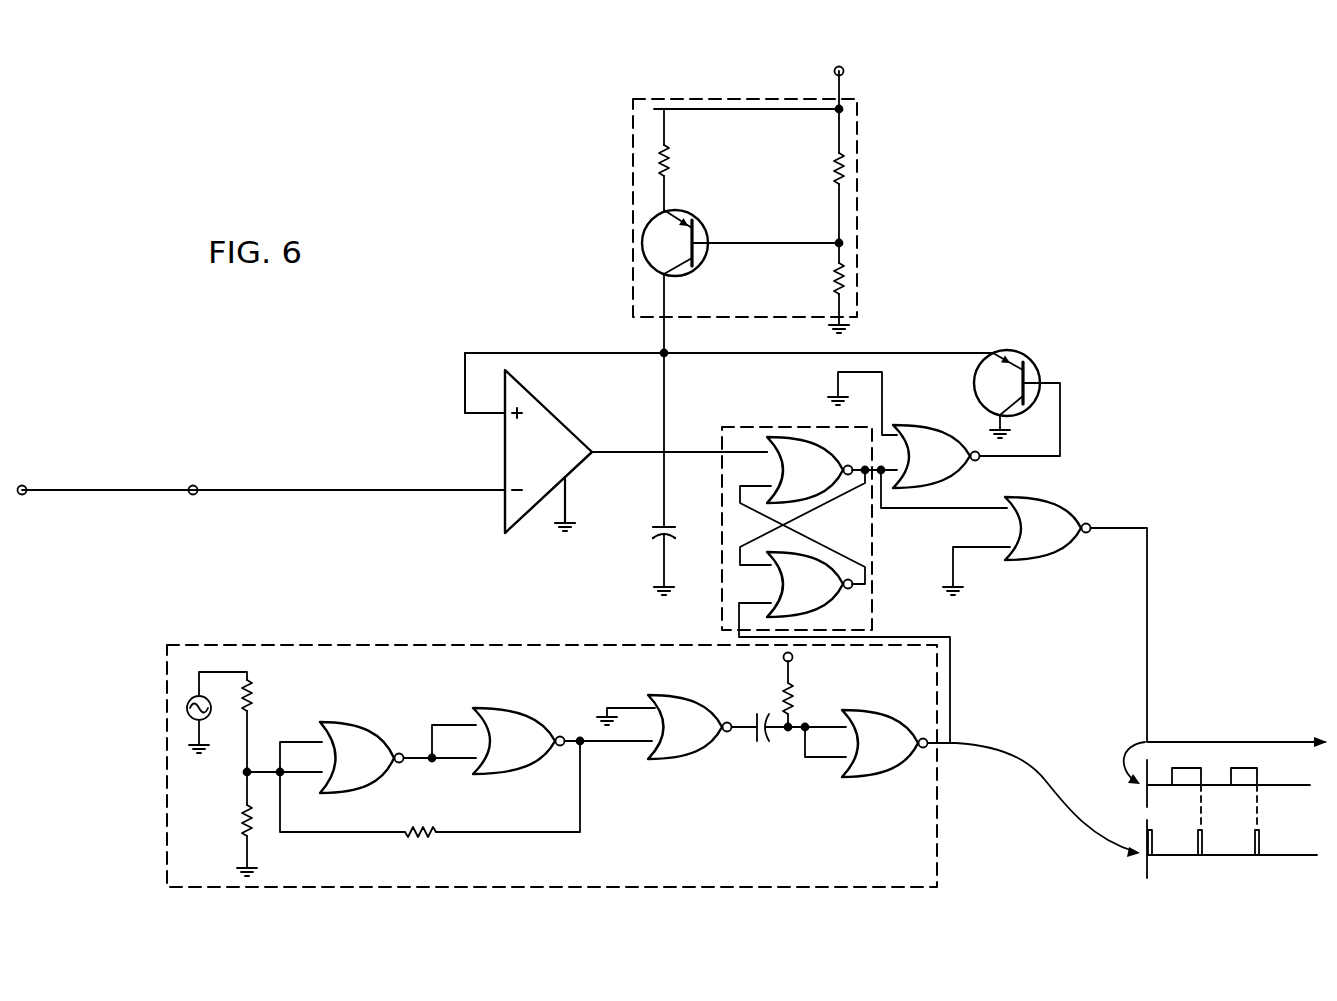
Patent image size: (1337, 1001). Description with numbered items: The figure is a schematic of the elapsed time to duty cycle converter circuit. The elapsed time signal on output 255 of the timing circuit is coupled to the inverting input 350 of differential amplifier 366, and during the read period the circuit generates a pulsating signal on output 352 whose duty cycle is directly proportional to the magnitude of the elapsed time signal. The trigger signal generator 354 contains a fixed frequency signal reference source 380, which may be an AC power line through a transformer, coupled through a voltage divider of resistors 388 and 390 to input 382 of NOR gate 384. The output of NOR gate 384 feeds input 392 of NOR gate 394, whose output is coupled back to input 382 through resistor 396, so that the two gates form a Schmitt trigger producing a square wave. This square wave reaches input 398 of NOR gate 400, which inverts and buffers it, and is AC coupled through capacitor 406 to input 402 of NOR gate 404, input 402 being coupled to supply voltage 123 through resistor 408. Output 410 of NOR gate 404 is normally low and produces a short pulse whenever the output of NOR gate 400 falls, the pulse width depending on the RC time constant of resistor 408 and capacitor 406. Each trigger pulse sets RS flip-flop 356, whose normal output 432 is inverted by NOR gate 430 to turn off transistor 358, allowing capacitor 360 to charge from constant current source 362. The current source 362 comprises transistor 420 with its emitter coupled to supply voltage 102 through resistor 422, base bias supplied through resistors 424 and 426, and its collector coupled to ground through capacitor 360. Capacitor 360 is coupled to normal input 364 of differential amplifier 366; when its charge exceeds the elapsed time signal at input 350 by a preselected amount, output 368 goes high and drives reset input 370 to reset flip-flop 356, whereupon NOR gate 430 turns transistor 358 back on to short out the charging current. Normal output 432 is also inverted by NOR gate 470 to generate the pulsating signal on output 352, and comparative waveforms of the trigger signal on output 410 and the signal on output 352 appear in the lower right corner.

The supply voltage 102 is at (843, 69).
The supply voltage 123 is at (784, 660).
The output of the timing circuit 255 is at (24, 486).
The inverting input 350 is at (196, 486).
The output 352 is at (1147, 530).
The trigger signal generator 354 is at (937, 812).
The RS flip-flop 356 is at (872, 545).
The transistor 358 is at (1018, 350).
The capacitor 360 is at (672, 532).
The constant current source 362 is at (633, 190).
The normal input 364 is at (465, 418).
The differential amplifier 366 is at (560, 420).
The output 368 is at (600, 452).
The reset input 370 is at (700, 452).
The signal reference source 380 is at (187, 707).
The input 382 is at (276, 752).
The NOR gate 384 is at (345, 722).
The resistor 388 is at (252, 695).
The resistor 390 is at (242, 815).
The input 392 is at (440, 760).
The NOR gate 394 is at (500, 708).
The resistor 396 is at (412, 828).
The input 398 is at (640, 743).
The NOR gate 400 is at (672, 695).
The input 402 is at (820, 727).
The NOR gate 404 is at (880, 712).
The capacitor 406 is at (762, 740).
The resistor 408 is at (794, 690).
The output 410 is at (952, 740).
The transistor 420 is at (690, 215).
The resistor 422 is at (668, 155).
The resistor 424 is at (843, 160).
The resistor 426 is at (843, 270).
The NOR gate 430 is at (905, 425).
The normal output 432 is at (885, 480).
The NOR gate 470 is at (1045, 497).